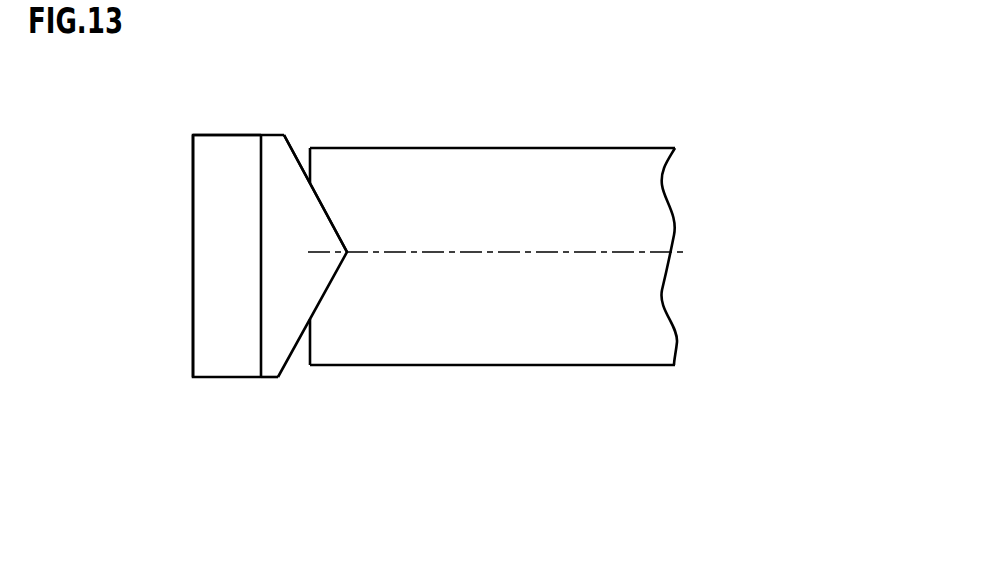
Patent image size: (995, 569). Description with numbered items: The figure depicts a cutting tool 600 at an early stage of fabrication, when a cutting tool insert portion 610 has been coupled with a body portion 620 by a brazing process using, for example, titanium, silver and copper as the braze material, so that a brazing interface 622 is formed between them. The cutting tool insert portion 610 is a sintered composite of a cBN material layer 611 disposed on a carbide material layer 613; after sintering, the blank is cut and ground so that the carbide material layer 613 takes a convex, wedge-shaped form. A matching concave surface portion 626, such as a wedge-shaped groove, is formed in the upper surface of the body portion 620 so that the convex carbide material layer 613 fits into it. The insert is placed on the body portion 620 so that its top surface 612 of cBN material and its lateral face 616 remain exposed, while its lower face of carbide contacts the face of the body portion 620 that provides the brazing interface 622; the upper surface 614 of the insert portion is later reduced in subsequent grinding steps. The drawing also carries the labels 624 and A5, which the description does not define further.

The cutting tool 600 is at (703, 86).
The cutting tool insert portion 610 is at (174, 273).
The cBN material layer 611 is at (247, 289).
The top surface 612 is at (293, 150).
The carbide material layer 613 is at (312, 289).
The upper surface 614 is at (193, 190).
The lateral face 616 is at (230, 135).
The body portion 620 is at (540, 210).
The brazing interface 622 is at (558, 147).
The tube end 624 is at (307, 366).
The concave surface portion 626 is at (330, 207).
The axis A5 is at (580, 252).